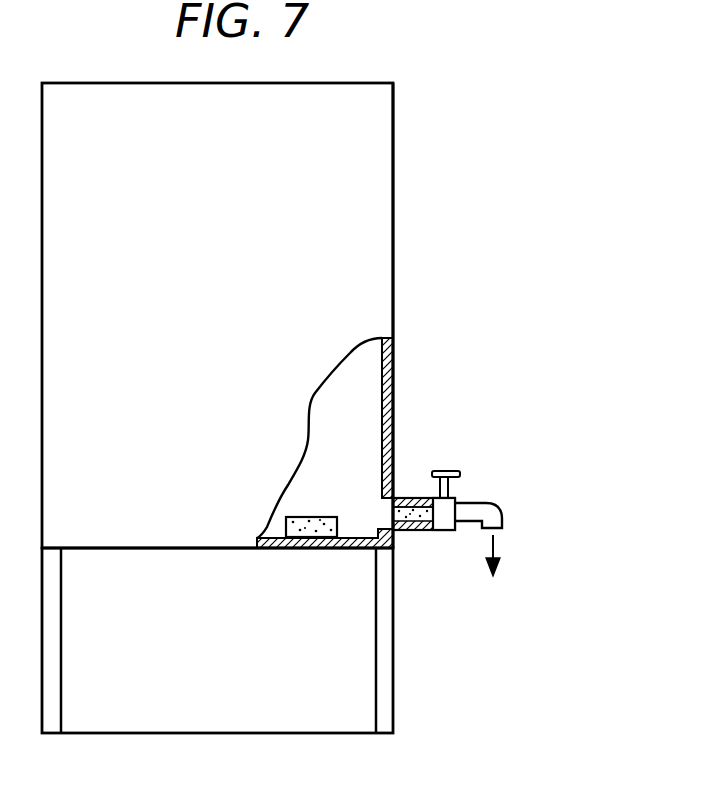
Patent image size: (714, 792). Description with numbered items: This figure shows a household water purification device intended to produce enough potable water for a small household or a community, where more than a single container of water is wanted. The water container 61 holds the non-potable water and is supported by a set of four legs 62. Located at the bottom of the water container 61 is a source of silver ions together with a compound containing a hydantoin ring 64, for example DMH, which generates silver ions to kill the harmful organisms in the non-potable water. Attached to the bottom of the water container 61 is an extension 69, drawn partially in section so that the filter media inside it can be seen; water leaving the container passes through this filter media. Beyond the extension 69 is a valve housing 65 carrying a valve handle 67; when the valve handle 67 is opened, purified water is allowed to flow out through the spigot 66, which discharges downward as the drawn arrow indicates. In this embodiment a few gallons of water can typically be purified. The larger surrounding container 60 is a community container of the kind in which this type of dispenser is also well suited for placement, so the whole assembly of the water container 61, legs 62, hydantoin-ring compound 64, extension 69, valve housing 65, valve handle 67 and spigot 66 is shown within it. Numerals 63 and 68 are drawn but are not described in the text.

The container 60 is at (422, 149).
The water container 61 is at (395, 282).
The legs 62 is at (54, 643).
The flexible water bag 63 is at (355, 405).
The compound containing a hydantoin ring 64 is at (308, 520).
The valve housing 65 is at (452, 503).
The spigot 66 is at (503, 522).
The valve handle 67 is at (447, 467).
The filter 68 is at (413, 530).
The extension 69 is at (395, 495).